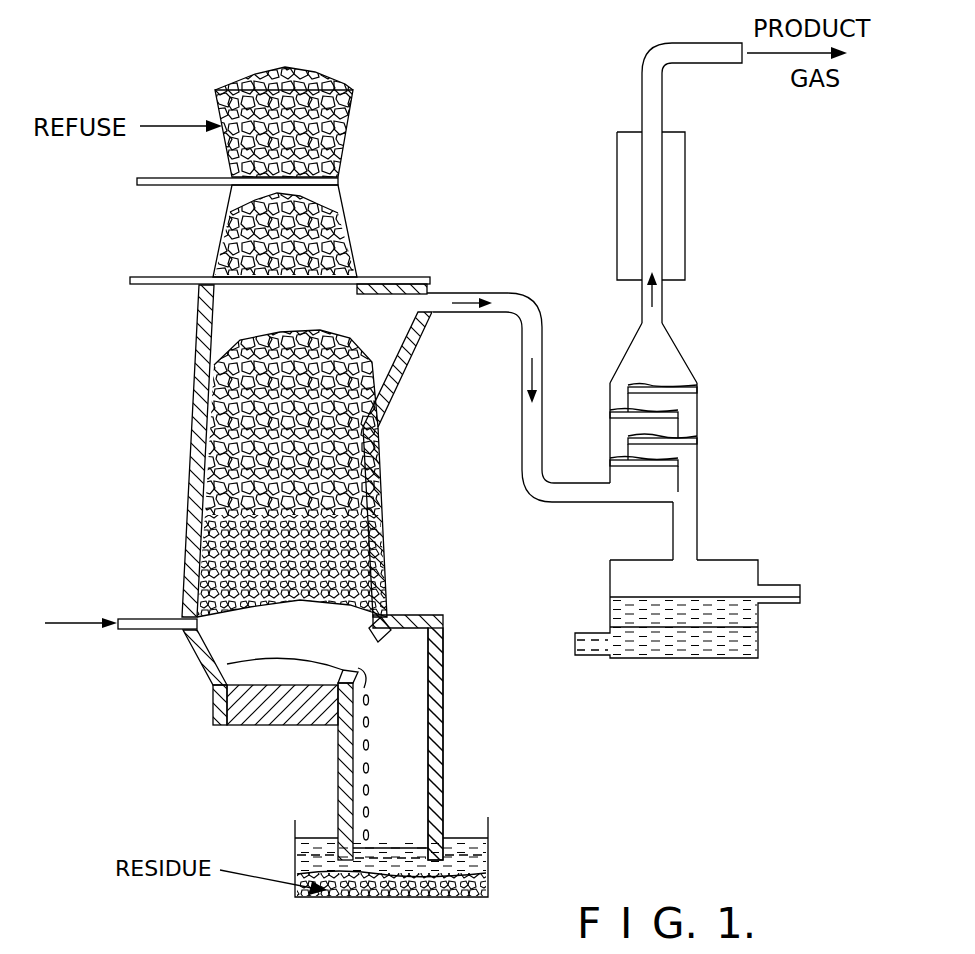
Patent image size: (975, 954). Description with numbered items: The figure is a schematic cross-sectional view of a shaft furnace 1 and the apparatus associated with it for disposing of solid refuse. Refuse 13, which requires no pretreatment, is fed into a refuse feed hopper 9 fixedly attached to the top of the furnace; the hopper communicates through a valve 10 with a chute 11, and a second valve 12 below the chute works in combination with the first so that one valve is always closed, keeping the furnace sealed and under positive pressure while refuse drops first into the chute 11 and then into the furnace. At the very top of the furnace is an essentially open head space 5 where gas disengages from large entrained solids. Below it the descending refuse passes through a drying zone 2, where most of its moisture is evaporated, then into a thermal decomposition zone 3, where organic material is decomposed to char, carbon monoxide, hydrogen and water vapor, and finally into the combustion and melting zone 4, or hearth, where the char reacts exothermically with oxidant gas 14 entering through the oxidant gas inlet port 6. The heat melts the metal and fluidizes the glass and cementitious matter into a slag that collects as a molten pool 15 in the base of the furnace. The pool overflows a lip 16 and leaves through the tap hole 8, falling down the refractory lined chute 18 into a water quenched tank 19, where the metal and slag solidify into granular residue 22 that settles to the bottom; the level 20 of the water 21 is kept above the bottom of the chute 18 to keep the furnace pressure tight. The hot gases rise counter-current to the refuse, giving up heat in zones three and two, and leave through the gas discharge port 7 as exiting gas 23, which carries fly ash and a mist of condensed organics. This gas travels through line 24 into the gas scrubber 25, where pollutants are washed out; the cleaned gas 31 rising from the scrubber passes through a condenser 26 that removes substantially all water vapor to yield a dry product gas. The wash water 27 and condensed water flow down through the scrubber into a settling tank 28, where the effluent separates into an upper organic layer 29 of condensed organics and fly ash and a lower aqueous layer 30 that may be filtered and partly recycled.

The shaft furnace 1 is at (279, 451).
The drying zone 2 is at (195, 342).
The thermal decomposition zone 3 is at (190, 518).
The combustion and melting zone 4 is at (356, 626).
The head space 5 is at (228, 314).
The oxidant gas inlet port 6 is at (147, 629).
The gas discharge port 7 is at (423, 302).
The tap hole 8 is at (370, 653).
The refuse feed hopper 9 is at (353, 120).
The valve 10 is at (184, 185).
The chute 11 is at (347, 229).
The second valve 12 is at (200, 278).
The refuse 13 is at (310, 84).
The oxidant gas 14 is at (48, 628).
The molten pool 15 is at (233, 669).
The lip 16 is at (343, 670).
The refractory lined chute 18 is at (443, 743).
The water quenched tank 19 is at (488, 825).
The water level 20 is at (325, 857).
The water 21 is at (488, 868).
The metal and slag residue 22 is at (363, 895).
The exiting gas 23 is at (478, 292).
The line 24 is at (521, 417).
The gas scrubber 25 is at (697, 468).
The condenser 26 is at (678, 180).
The wash water 27 is at (690, 343).
The settling tank 28 is at (722, 553).
The organic layer 29 is at (622, 617).
The aqueous layer 30 is at (750, 652).
The gas rising from scrubber 31 is at (663, 295).